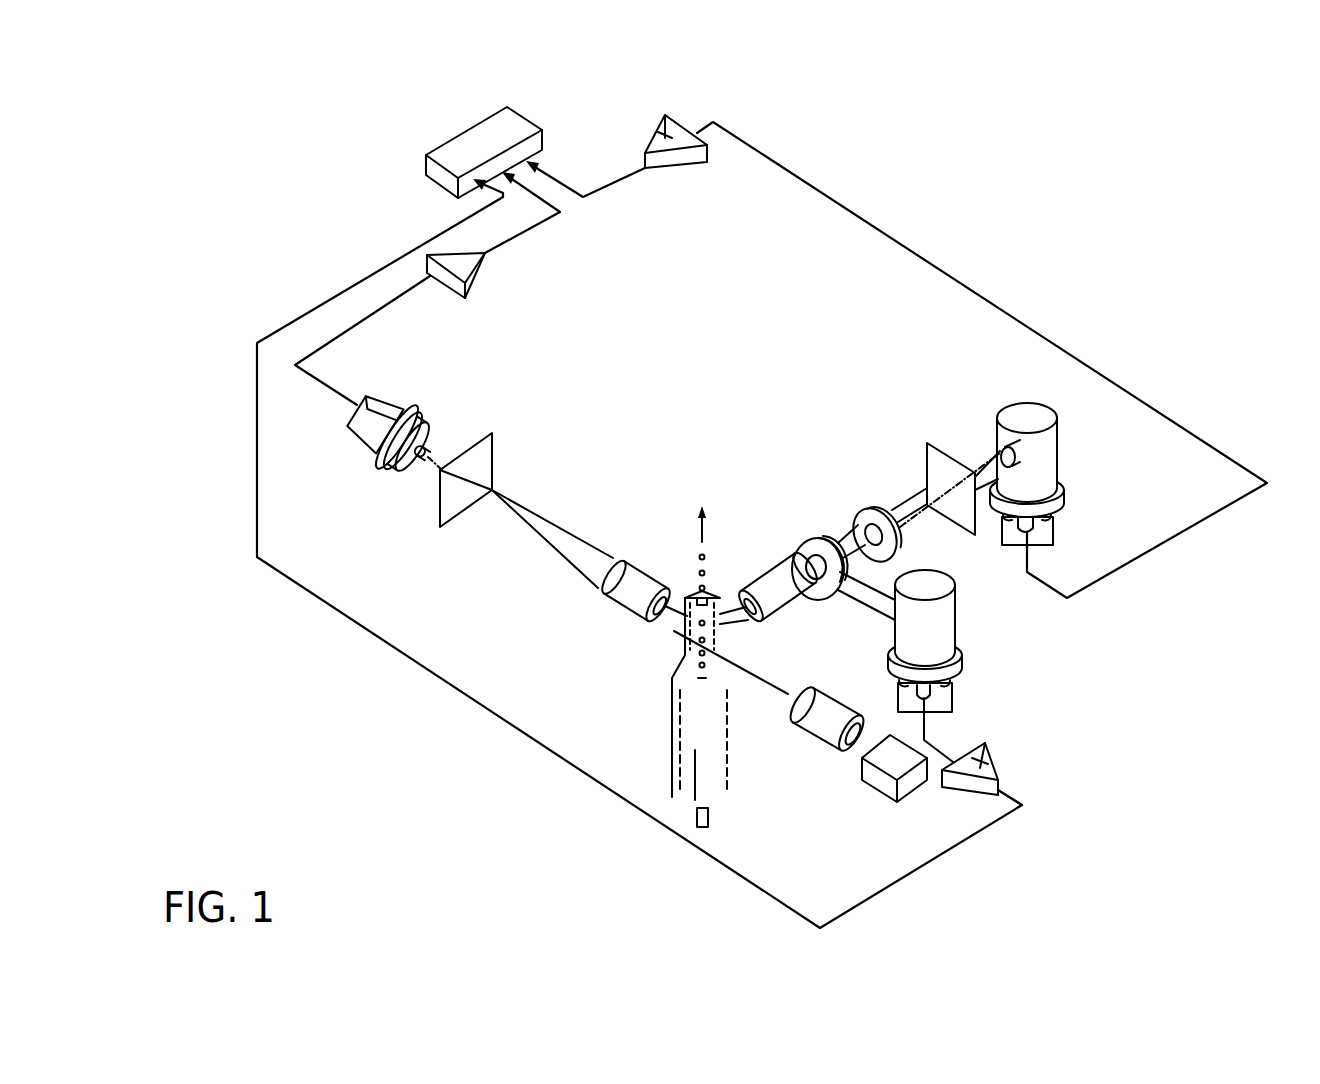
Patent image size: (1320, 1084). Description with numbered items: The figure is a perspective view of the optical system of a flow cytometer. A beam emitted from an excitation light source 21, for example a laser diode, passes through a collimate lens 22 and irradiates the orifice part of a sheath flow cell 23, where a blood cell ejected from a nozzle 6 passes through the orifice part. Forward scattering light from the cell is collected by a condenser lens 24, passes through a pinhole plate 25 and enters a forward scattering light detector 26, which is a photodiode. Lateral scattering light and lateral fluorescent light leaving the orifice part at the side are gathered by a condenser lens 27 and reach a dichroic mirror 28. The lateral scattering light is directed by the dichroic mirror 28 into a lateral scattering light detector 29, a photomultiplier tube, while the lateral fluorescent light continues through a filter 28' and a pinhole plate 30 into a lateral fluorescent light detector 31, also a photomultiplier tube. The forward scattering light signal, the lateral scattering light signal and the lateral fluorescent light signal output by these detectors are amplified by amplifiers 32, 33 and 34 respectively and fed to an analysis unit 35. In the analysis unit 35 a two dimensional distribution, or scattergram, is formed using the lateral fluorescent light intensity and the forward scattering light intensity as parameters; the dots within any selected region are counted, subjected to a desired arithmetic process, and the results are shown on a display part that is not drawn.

The nozzle 6 is at (708, 818).
The excitation light source 21 is at (880, 778).
The collimate lens 22 is at (832, 712).
The sheath flow cell 23 is at (650, 688).
The condenser lens 24 is at (636, 575).
The pinhole plate 25 is at (478, 457).
The forward scattering light detector 26 is at (420, 422).
The condenser lens 27 is at (770, 582).
The dichroic mirror 28 is at (840, 541).
The filter 28' is at (882, 496).
The lateral scattering light detector 29 is at (945, 620).
The pinhole plate 30 is at (943, 468).
The lateral fluorescent light detector 31 is at (1045, 456).
The amplifier 32 is at (465, 262).
The amplifier 33 is at (980, 754).
The amplifier 34 is at (652, 140).
The analysis unit 35 is at (466, 152).